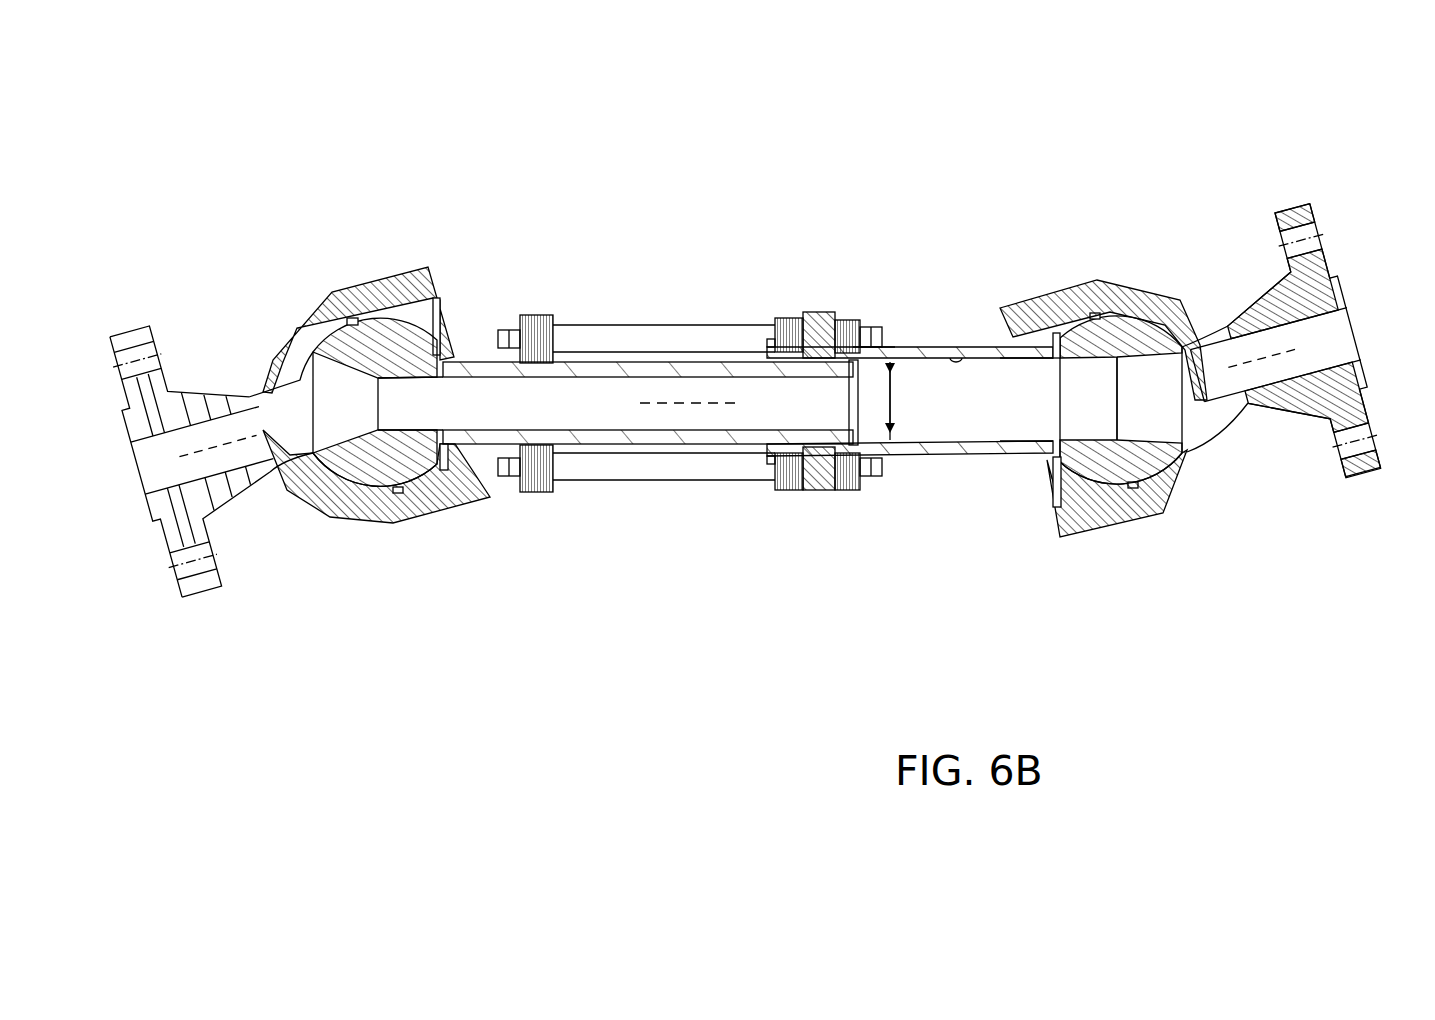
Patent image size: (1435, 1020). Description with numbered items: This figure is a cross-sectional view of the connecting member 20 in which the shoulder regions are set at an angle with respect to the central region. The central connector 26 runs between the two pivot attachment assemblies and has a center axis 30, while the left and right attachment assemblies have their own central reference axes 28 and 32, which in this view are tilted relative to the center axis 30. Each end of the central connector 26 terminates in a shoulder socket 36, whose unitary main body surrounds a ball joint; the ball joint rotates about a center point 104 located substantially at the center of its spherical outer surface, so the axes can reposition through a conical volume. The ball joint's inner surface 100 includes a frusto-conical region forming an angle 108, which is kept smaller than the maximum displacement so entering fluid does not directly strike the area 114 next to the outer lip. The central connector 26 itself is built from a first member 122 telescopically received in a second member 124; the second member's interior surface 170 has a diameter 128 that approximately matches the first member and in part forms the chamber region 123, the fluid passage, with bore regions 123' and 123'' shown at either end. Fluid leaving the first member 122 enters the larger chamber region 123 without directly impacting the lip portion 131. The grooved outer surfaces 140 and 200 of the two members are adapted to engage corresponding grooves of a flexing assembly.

The connecting member 20 is at (530, 220).
The central connector 26 is at (710, 540).
The central reference axis 28 is at (215, 447).
The center axis 30 is at (663, 410).
The central reference axis 32 is at (1273, 362).
The shoulder socket 36 is at (386, 289).
The inner surface 100 is at (330, 443).
The center point 104 is at (1117, 400).
The angle 108 is at (1182, 350).
The area adjacent to the outer lip 114 is at (1180, 337).
The first member 122 is at (601, 375).
The chamber region 123 is at (722, 403).
The first tube bore end 123' is at (468, 403).
The second tube bore end 123'' is at (1021, 399).
The second member 124 is at (888, 349).
The diameter 128 is at (891, 401).
The lip portion 131 is at (857, 440).
The outer surface 140 is at (573, 360).
The interior surface 170 is at (955, 360).
The outer surface 200 is at (917, 350).